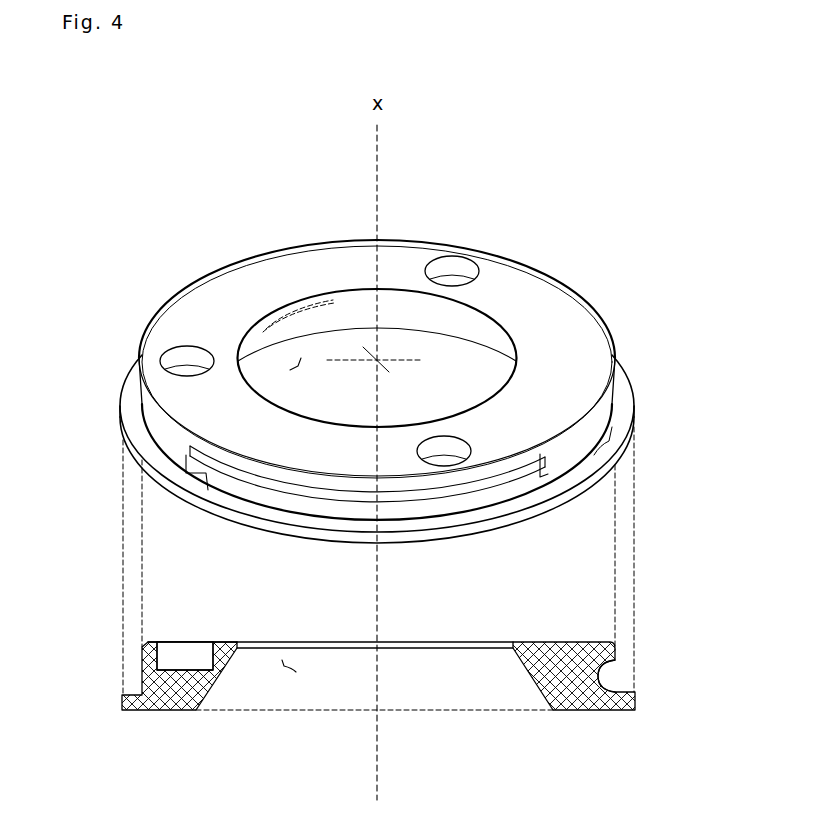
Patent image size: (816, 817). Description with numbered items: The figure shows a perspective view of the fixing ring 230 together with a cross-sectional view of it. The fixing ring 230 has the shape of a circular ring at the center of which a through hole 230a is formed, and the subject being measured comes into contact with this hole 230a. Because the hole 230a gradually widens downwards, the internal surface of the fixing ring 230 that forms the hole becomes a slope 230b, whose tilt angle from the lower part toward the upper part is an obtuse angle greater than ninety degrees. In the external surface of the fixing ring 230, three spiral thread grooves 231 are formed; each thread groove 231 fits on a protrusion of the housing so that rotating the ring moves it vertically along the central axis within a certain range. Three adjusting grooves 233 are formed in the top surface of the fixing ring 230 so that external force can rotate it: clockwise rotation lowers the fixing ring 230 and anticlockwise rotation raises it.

The fixing ring 230 is at (503, 240).
The through hole 230a is at (290, 370).
The slope 230b is at (318, 317).
The thread groove 231 is at (520, 472).
The adjusting groove 233 is at (438, 250).